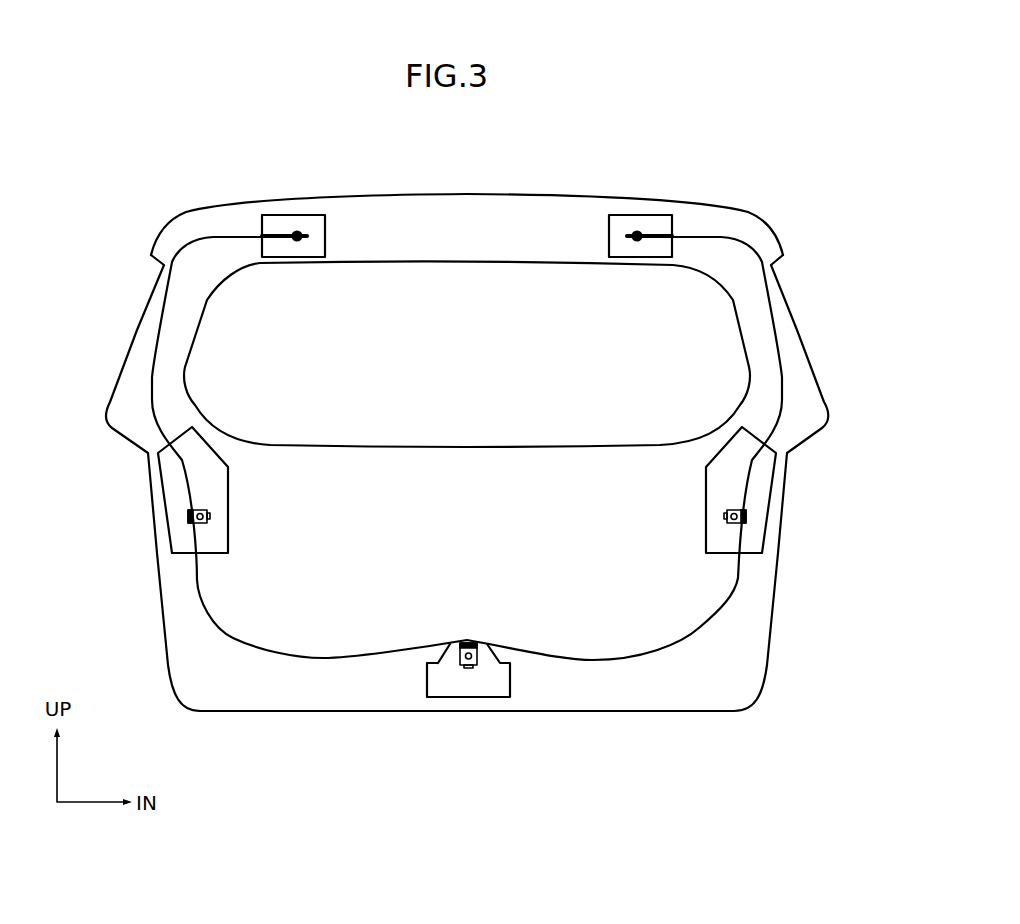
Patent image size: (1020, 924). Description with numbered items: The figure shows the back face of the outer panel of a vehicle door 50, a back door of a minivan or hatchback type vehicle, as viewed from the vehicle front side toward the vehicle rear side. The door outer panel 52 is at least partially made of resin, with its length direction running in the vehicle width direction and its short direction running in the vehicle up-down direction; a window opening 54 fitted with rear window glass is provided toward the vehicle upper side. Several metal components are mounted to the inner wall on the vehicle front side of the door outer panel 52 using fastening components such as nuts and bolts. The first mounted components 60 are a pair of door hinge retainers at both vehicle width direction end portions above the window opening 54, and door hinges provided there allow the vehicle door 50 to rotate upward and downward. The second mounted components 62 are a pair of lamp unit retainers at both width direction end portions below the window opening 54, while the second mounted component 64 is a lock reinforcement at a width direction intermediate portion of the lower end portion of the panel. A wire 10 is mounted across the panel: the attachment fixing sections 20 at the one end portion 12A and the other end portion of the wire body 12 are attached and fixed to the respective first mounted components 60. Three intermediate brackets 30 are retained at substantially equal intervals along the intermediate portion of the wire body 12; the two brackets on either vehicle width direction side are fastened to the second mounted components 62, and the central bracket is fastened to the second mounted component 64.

The wire 10 is at (342, 657).
The wire body 12 is at (630, 657).
The one end portion of the wire body 12A is at (252, 233).
The attachment fixing section 20 is at (300, 228).
The intermediate bracket 30 is at (214, 530).
The vehicle door 50 is at (470, 192).
The door outer panel 52 is at (383, 703).
The window opening 54 is at (455, 365).
The first mounted component 60 is at (327, 236).
The second mounted component 62 is at (223, 488).
The second mounted component 64 is at (512, 677).